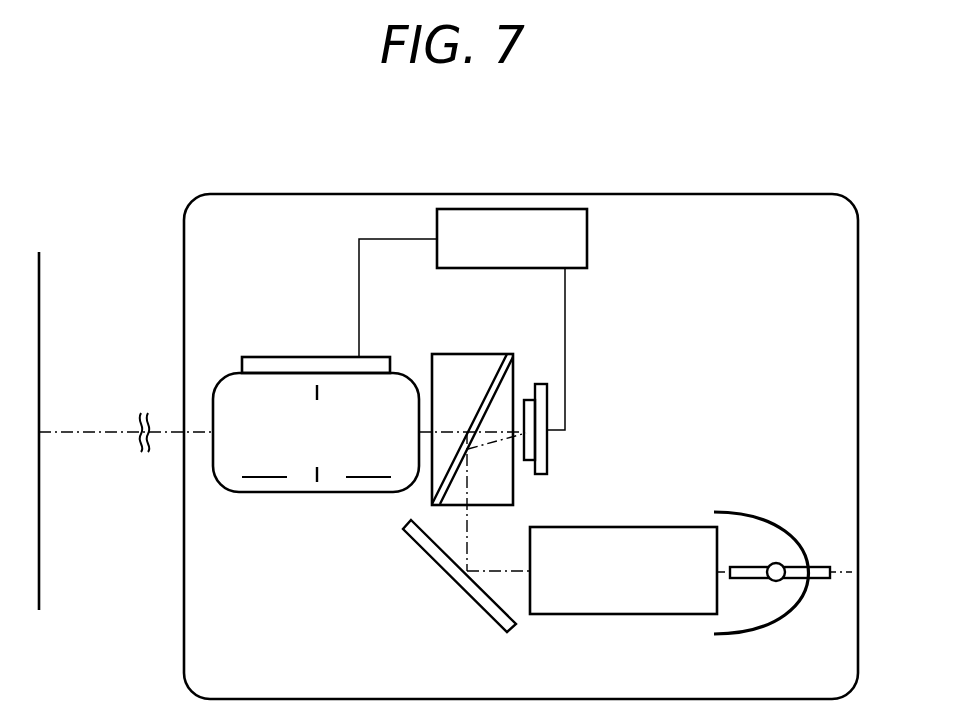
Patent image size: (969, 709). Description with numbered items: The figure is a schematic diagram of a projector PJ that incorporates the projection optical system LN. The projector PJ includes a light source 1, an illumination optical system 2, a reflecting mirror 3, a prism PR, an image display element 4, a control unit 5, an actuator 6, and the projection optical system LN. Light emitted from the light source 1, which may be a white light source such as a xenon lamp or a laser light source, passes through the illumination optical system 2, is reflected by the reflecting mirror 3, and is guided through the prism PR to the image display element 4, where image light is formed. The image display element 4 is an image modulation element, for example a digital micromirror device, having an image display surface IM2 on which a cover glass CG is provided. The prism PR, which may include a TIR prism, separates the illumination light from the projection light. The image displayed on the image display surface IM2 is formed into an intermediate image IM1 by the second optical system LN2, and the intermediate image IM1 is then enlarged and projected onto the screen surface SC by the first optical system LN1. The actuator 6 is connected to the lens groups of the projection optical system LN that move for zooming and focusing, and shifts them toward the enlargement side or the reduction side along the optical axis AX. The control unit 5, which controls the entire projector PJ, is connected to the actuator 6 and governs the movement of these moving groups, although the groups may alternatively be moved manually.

The light source 1 is at (749, 632).
The illumination optical system 2 is at (585, 614).
The reflecting mirror 3 is at (478, 610).
The image display element 4 is at (548, 464).
The control unit 5 is at (588, 239).
The actuator 6 is at (275, 356).
The projector PJ is at (184, 238).
The screen surface SC is at (40, 570).
The optical axis AX is at (66, 433).
The projection optical system LN is at (334, 493).
The first optical system LN1 is at (264, 465).
The second optical system LN2 is at (368, 465).
The intermediate image IM1 is at (317, 473).
The image display surface IM2 is at (548, 436).
The prism PR is at (518, 352).
The cover glass CG is at (529, 461).